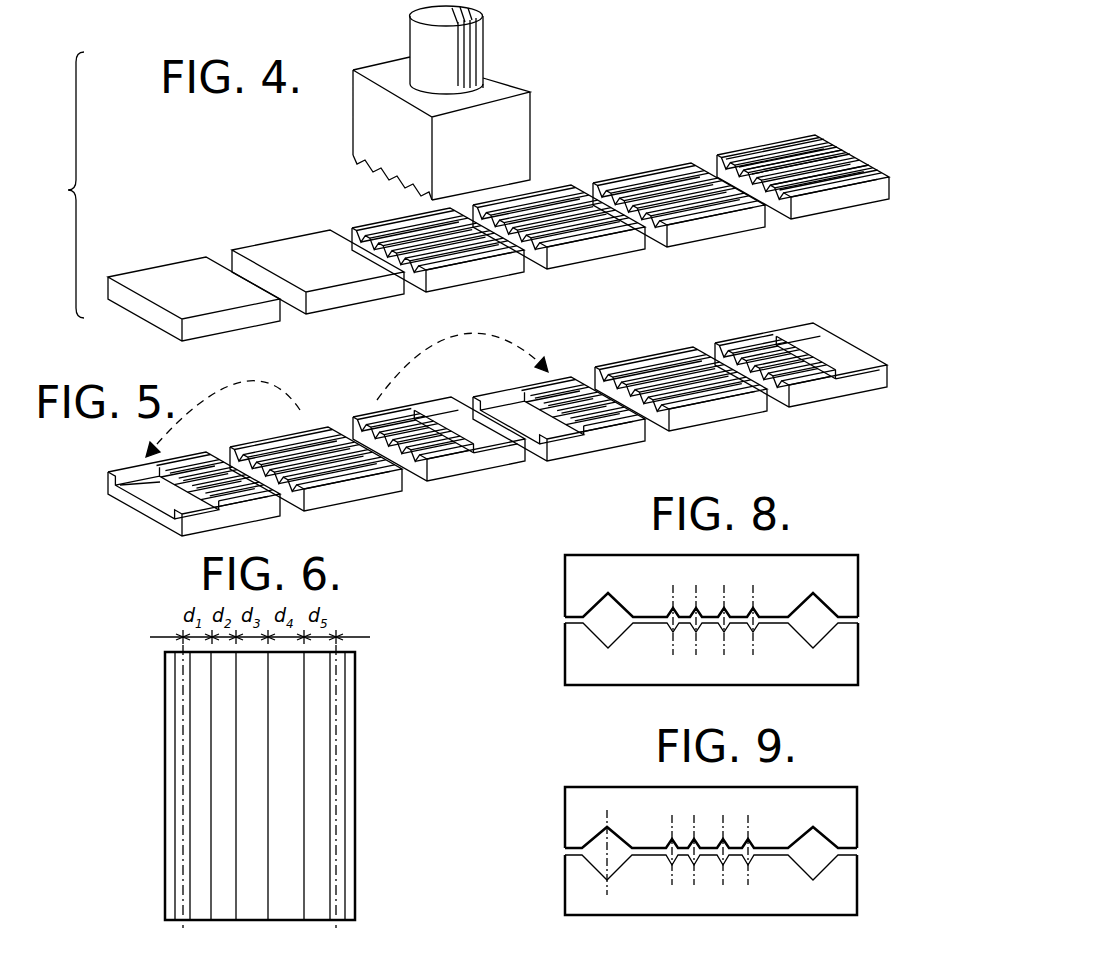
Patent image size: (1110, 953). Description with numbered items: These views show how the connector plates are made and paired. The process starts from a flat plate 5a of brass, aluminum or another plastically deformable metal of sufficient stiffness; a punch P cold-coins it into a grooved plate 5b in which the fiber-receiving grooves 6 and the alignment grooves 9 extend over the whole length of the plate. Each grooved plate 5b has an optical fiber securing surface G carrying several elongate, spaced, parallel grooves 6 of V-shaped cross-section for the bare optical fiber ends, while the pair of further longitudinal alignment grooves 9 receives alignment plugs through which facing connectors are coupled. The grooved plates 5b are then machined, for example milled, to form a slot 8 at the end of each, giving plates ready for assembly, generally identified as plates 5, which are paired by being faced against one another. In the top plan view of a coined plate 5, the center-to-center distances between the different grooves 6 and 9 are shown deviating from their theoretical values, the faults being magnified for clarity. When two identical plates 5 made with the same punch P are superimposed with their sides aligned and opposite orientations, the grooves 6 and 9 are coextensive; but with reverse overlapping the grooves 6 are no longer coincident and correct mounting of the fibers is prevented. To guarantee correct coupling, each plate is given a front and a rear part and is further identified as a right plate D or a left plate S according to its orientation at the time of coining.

In FIG. 4, the flat plate 5a is at (185, 267).
In FIG. 4, the grooved plate 5b is at (378, 224).
In FIG. 4, the punch P is at (520, 116).
In FIG. 4, the optical fiber securing surface G is at (660, 160).
In FIG. 4, the longitudinal alignment groove 9 is at (823, 137).
In FIG. 6, the longitudinal alignment groove 9 is at (180, 822).
In FIG. 8, the longitudinal alignment groove 9 is at (585, 612).
In FIG. 9, the longitudinal alignment groove 9 is at (580, 848).
In FIG. 4, the longitudinal groove 6 is at (855, 150).
In FIG. 6, the longitudinal groove 6 is at (318, 920).
In FIG. 8, the longitudinal groove 6 is at (760, 614).
In FIG. 9, the longitudinal groove 6 is at (665, 842).
In FIG. 5, the plate 5 is at (115, 458).
In FIG. 6, the plate 5 is at (358, 727).
In FIG. 8, the plate 5 is at (572, 567).
In FIG. 9, the plate 5 is at (858, 815).
In FIG. 5, the slot 8 is at (150, 492).
In FIG. 5, the right plate D is at (385, 485).
In FIG. 9, the right plate D is at (572, 887).
In FIG. 9, the left plate S is at (572, 815).